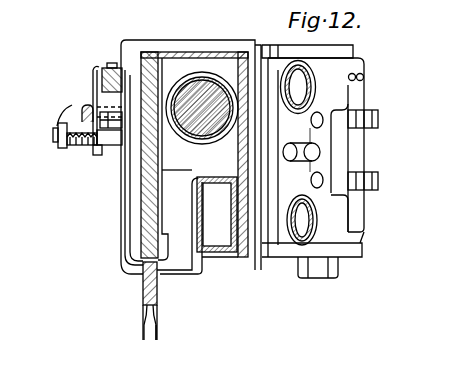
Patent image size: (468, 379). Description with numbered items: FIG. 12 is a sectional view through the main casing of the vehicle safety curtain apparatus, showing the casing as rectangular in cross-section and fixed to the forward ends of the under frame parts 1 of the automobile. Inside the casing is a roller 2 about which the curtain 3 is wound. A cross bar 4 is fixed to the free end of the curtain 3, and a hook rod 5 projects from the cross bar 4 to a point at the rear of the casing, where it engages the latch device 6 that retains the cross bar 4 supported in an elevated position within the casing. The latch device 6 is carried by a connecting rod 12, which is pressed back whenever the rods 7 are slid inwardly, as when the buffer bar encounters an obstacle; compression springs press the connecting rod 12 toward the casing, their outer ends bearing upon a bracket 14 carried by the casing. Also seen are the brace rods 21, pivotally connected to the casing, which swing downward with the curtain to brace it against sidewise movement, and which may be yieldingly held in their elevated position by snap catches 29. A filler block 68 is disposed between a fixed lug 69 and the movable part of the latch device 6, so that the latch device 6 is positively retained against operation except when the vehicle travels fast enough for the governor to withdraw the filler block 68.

The under frame parts 1 is at (172, 53).
The roller 2 is at (199, 93).
The curtain 3 is at (236, 153).
The cross bar 4 is at (212, 252).
The hook rod 5 is at (120, 240).
The brace rods 21 is at (142, 292).
The snap catches 29 is at (158, 325).
The connecting rod 12 is at (121, 62).
The filler block 68 is at (89, 105).
The latch device 6 is at (88, 108).
The fixed lug 69 is at (73, 108).
The bracket 14 is at (57, 127).
The rods 7 is at (320, 161).